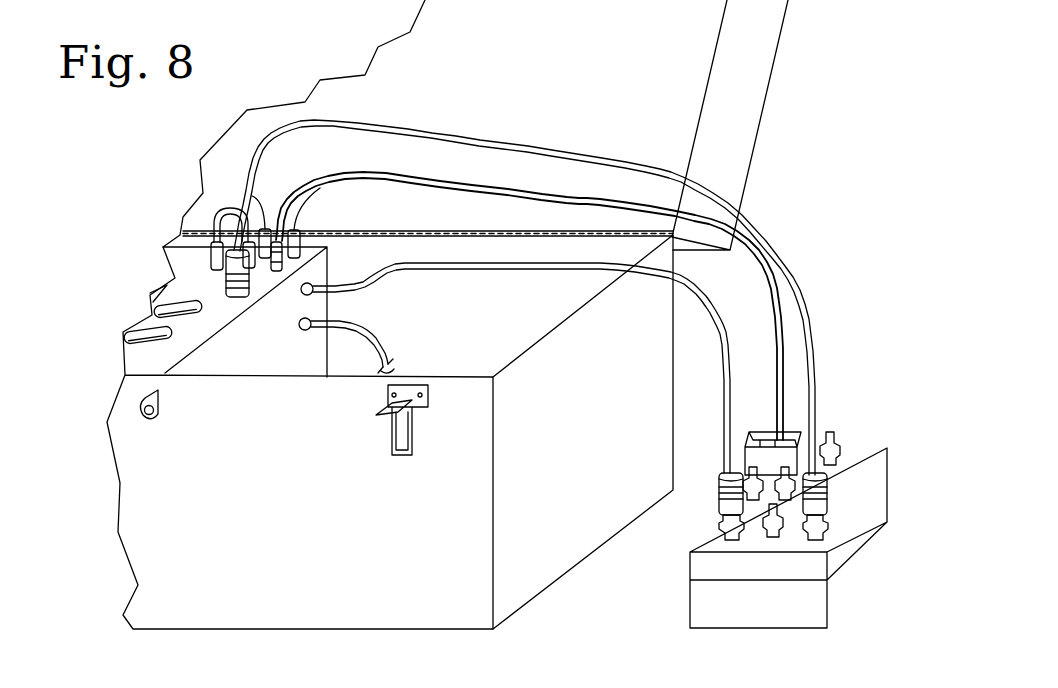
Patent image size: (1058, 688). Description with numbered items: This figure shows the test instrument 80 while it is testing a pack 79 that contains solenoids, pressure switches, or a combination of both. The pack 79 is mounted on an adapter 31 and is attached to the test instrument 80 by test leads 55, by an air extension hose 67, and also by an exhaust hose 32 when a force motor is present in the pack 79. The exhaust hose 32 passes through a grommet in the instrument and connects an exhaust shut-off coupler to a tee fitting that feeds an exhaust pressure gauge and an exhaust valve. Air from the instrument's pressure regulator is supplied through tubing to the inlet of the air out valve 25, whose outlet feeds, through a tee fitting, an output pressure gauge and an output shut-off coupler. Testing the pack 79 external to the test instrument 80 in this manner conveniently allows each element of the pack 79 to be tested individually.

The air out valve 25 is at (183, 313).
The adapter 31 is at (765, 530).
The exhaust hose 32 is at (728, 418).
The test leads 55 is at (778, 308).
The air extension hose 67 is at (818, 345).
The pack 79 is at (855, 582).
The test instrument 80 is at (124, 591).